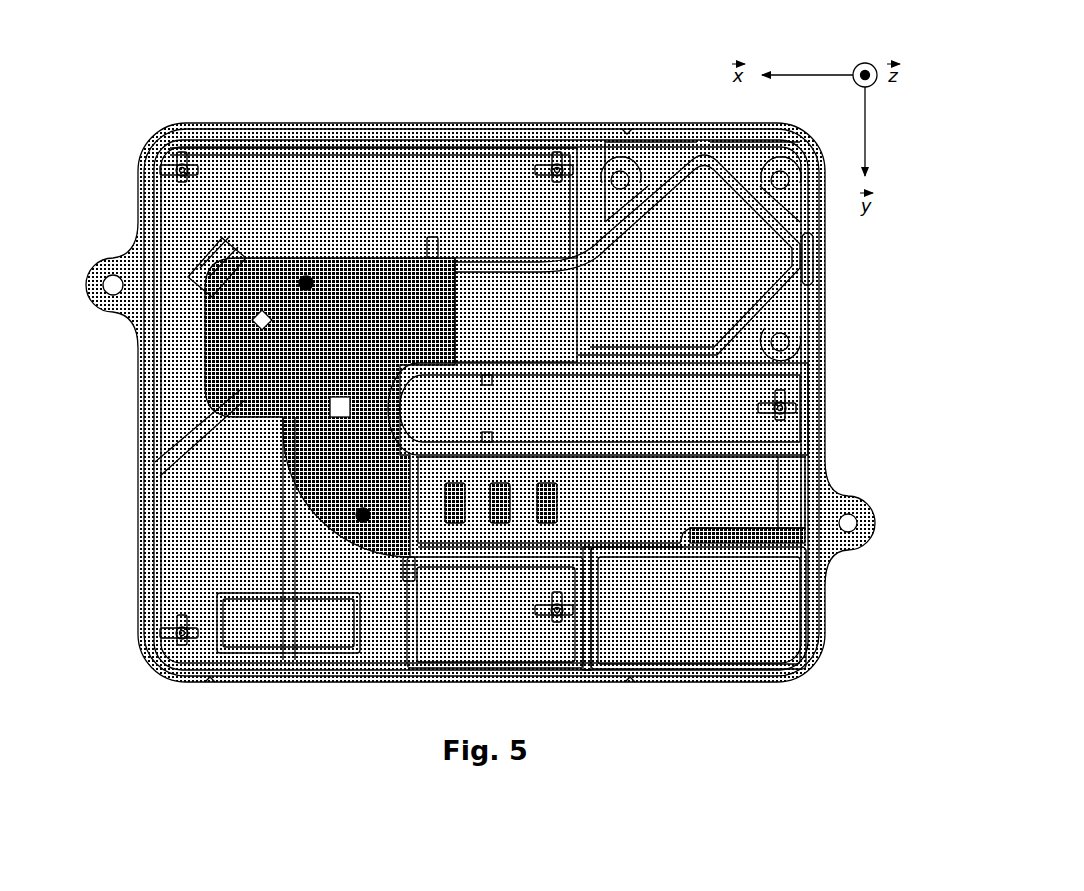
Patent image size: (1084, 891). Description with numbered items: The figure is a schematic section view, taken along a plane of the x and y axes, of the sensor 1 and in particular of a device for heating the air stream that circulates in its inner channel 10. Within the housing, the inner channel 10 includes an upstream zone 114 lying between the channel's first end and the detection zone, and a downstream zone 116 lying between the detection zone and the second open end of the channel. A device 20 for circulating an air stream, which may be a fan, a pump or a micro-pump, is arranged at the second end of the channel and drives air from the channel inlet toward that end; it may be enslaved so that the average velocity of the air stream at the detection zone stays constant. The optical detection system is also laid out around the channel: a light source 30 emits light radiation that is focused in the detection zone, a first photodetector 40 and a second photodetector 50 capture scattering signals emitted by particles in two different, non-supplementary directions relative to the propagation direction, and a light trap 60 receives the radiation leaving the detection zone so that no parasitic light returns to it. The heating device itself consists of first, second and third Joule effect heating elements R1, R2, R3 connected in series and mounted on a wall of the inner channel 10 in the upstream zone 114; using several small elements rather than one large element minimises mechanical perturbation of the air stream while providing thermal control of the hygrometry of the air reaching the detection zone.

The sensor 1 is at (510, 347).
The inner channel 10 is at (510, 402).
The device for circulating an air stream 20 is at (627, 255).
The light source 30 is at (598, 409).
The first photodetector 40 is at (330, 409).
The second photodetector 50 is at (395, 340).
The light trap 60 is at (278, 590).
The upstream zone 114 is at (611, 502).
The downstream zone 116 is at (516, 310).
The first Joule effect heating element R1 is at (547, 524).
The second Joule effect heating element R2 is at (503, 524).
The third Joule effect heating element R3 is at (457, 524).